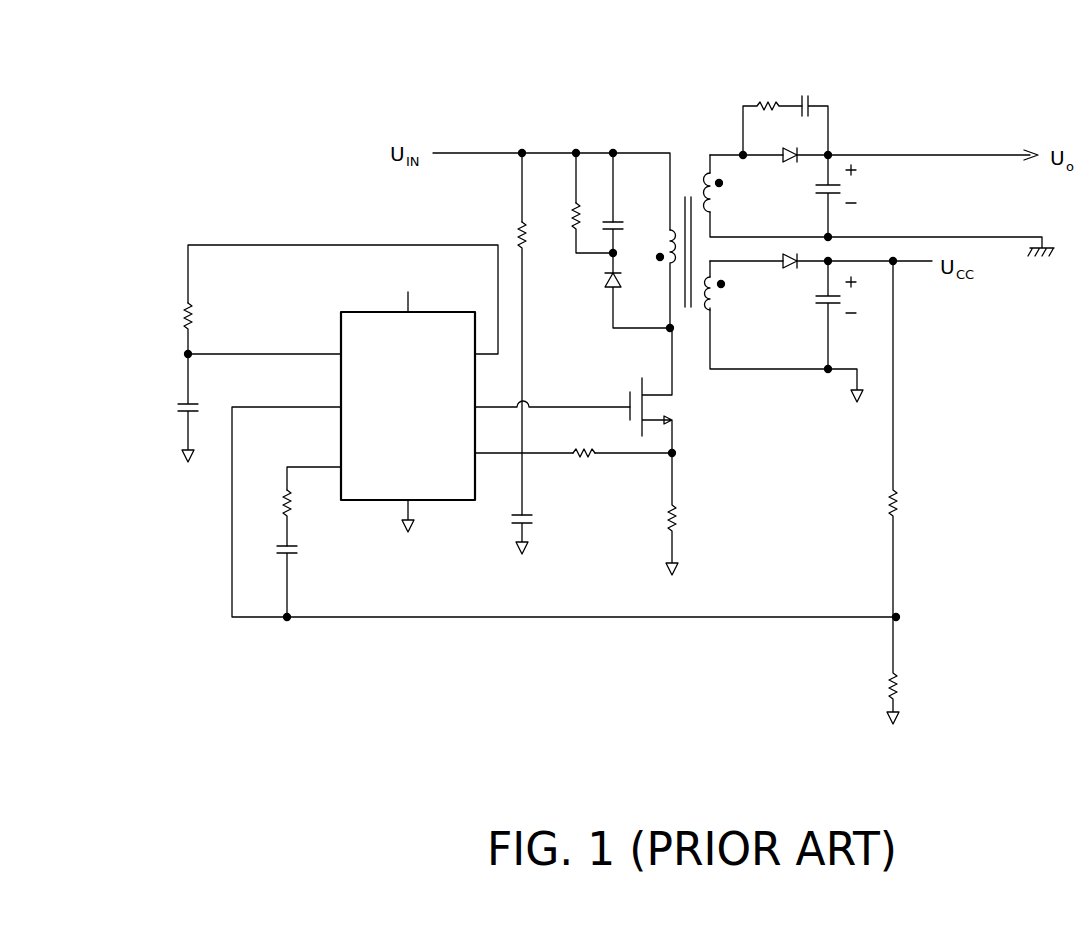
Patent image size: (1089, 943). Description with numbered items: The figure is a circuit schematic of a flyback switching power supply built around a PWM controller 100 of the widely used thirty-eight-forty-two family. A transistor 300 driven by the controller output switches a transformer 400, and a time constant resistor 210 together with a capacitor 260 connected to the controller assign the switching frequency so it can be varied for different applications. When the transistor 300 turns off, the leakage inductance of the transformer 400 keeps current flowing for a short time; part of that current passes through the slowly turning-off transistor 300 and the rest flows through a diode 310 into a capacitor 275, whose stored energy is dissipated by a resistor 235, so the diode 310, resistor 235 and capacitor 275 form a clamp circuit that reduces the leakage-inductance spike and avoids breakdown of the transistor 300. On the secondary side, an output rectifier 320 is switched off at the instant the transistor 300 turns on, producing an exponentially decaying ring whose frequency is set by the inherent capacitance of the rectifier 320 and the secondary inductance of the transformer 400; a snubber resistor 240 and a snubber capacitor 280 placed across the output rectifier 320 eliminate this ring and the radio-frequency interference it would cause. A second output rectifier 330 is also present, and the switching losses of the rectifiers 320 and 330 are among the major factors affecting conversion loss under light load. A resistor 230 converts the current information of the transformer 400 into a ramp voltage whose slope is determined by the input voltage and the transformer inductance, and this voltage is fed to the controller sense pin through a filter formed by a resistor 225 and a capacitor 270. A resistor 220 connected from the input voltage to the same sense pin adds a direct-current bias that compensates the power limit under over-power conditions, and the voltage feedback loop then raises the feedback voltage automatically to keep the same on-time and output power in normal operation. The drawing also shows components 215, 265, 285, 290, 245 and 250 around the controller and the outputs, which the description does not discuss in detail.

The PWM controller 100 is at (341, 312).
The time constant resistor 210 is at (186, 310).
The capacitor 260 is at (183, 412).
The compensation resistor 215 is at (290, 505).
The compensation capacitor 265 is at (298, 552).
The resistor 220 is at (520, 236).
The capacitor 270 is at (533, 522).
The resistor 235 is at (580, 206).
The capacitor 275 is at (624, 221).
The diode 310 is at (613, 289).
The transformer 400 is at (691, 200).
The output rectifier 320 is at (791, 160).
The snubber resistor 240 is at (764, 102).
The snubber capacitor 280 is at (806, 96).
The output filter capacitor 285 is at (830, 185).
The output rectifier 330 is at (788, 266).
The auxiliary supply capacitor 290 is at (842, 303).
The feedback resistor 245 is at (896, 500).
The feedback resistor 250 is at (897, 690).
The transistor 300 is at (672, 395).
The resistor 225 is at (594, 456).
The resistor 230 is at (676, 518).